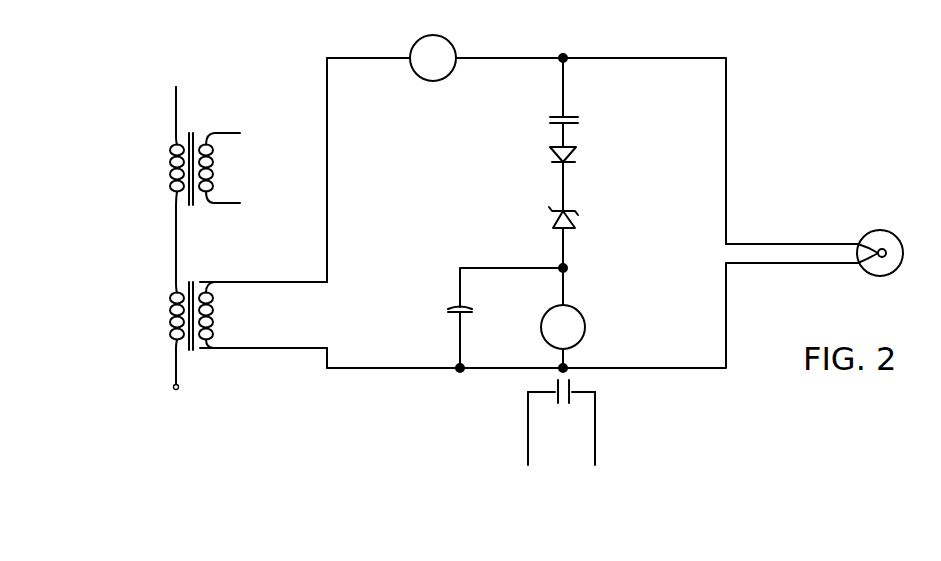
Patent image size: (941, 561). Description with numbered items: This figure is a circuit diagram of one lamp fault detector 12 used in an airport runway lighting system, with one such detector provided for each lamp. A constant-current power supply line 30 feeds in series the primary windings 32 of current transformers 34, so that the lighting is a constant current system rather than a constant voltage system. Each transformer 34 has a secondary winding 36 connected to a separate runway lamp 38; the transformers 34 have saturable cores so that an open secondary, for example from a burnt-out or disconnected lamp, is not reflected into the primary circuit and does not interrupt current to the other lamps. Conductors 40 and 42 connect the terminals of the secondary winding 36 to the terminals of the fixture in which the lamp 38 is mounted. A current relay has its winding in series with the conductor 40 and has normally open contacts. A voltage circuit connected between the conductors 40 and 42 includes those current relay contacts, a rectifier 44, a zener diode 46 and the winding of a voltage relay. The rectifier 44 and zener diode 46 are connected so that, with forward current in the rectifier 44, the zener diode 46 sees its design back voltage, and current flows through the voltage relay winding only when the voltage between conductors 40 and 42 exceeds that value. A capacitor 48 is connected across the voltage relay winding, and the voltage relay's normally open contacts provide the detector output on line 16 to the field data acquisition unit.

The fault detector 12 is at (418, 236).
The line 16 is at (597, 440).
The constant-current power supply line 30 is at (176, 103).
The primary winding 32 is at (170, 165).
The current transformer 34 is at (212, 118).
The secondary winding 36 is at (212, 166).
The runway lamp 38 is at (878, 277).
The conductor 40 is at (360, 58).
The conductor 42 is at (378, 370).
The rectifier 44 is at (578, 153).
The zener diode 46 is at (580, 215).
The capacitor 48 is at (448, 308).